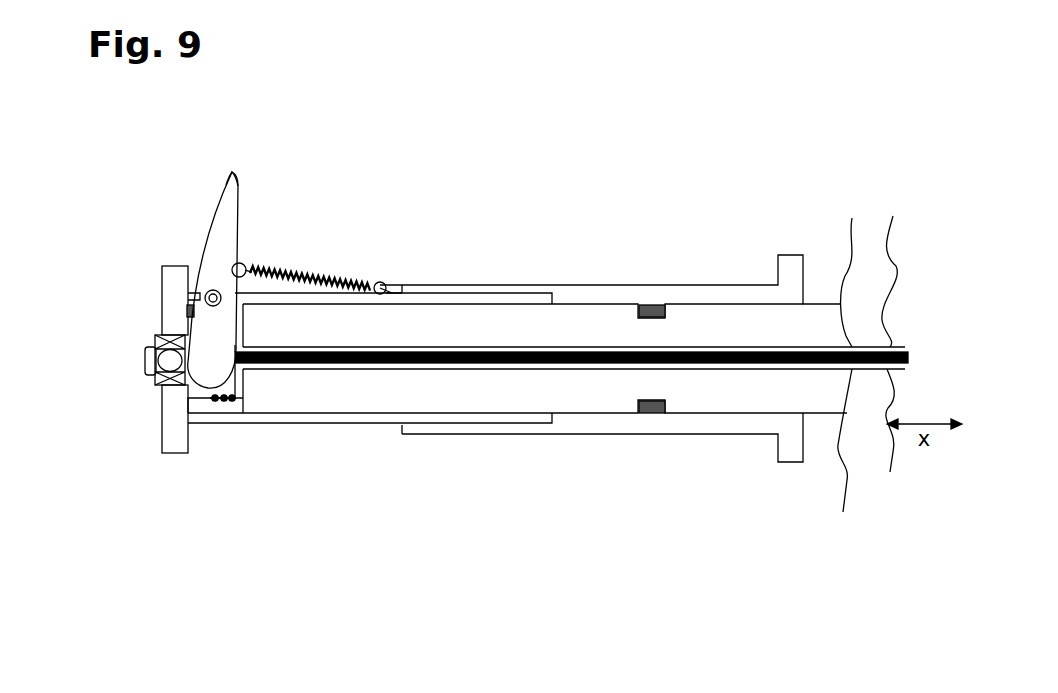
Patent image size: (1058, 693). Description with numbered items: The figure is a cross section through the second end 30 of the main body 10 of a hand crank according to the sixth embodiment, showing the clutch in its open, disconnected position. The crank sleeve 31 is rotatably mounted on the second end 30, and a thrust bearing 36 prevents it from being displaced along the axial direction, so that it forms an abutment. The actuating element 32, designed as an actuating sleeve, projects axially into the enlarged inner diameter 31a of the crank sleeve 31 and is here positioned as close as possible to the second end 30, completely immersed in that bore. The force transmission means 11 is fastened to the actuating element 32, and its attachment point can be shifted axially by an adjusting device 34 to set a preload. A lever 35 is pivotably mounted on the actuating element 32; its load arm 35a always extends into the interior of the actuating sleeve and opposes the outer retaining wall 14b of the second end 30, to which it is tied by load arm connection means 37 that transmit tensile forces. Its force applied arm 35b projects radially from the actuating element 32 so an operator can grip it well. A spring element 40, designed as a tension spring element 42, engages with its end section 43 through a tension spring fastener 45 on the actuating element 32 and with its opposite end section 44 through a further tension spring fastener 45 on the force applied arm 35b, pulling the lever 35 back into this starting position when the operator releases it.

The main body 10 is at (825, 418).
The force transmission means 11 is at (893, 216).
The outer retaining wall 14b is at (243, 383).
The second end 30 is at (283, 438).
The crank sleeve 31 is at (735, 285).
The enlarged inner diameter 31a is at (572, 293).
The actuating element 32 is at (383, 428).
The adjusting device 34 is at (154, 339).
The lever 35 is at (204, 266).
The load arm 35a is at (162, 423).
The force applied arm 35b is at (238, 184).
The thrust bearing 36 is at (652, 304).
The load arm connection means 37 is at (222, 399).
The spring element 40 is at (310, 189).
The tension spring element 42 is at (331, 274).
The end section 43 is at (376, 283).
The end section 44 is at (256, 262).
The tension spring fastener 45 is at (246, 268).